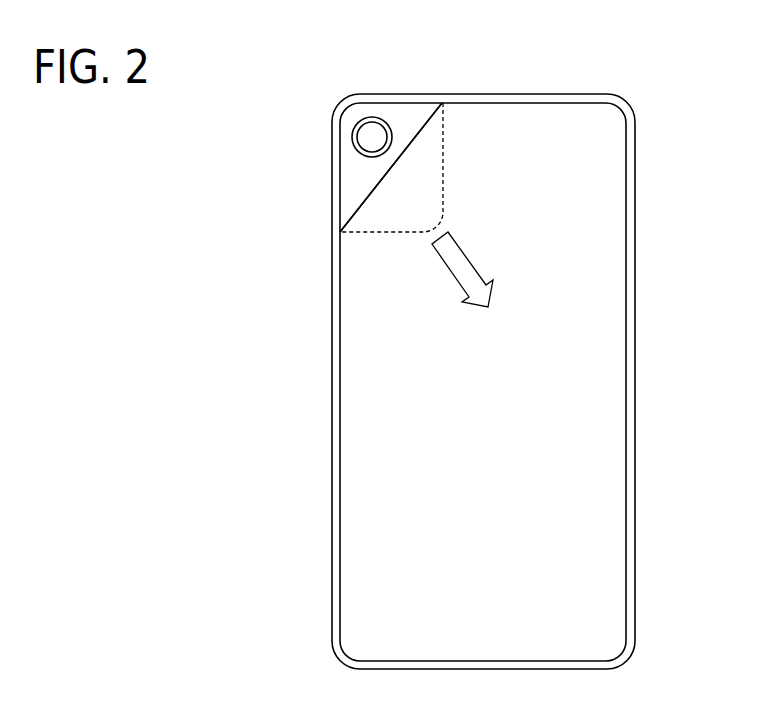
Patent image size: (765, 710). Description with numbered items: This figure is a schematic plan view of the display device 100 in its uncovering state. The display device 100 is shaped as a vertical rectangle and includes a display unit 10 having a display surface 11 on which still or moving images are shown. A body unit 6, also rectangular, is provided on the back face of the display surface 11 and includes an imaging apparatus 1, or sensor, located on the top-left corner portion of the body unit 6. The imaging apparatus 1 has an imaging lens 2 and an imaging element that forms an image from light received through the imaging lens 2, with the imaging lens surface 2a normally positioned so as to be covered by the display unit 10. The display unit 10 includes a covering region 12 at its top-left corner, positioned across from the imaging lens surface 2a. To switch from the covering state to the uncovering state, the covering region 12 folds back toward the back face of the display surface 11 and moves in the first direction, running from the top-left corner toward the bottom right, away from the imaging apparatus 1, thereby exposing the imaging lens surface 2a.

The display device 100 is at (633, 95).
The display unit 10 is at (600, 385).
The display surface 11 is at (498, 546).
The covering region 12 is at (419, 206).
The body unit 6 is at (348, 183).
The imaging apparatus 1 is at (382, 121).
The imaging lens 2 is at (390, 130).
The imaging lens surface 2a is at (383, 146).